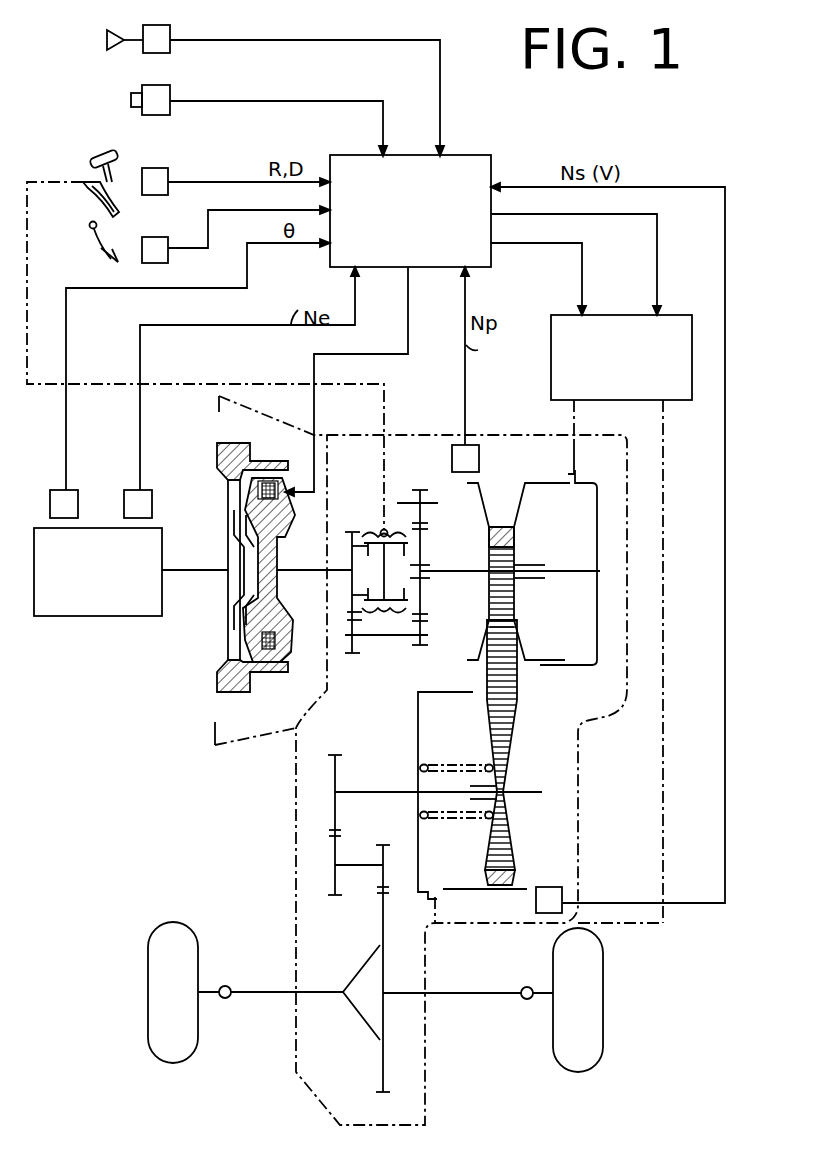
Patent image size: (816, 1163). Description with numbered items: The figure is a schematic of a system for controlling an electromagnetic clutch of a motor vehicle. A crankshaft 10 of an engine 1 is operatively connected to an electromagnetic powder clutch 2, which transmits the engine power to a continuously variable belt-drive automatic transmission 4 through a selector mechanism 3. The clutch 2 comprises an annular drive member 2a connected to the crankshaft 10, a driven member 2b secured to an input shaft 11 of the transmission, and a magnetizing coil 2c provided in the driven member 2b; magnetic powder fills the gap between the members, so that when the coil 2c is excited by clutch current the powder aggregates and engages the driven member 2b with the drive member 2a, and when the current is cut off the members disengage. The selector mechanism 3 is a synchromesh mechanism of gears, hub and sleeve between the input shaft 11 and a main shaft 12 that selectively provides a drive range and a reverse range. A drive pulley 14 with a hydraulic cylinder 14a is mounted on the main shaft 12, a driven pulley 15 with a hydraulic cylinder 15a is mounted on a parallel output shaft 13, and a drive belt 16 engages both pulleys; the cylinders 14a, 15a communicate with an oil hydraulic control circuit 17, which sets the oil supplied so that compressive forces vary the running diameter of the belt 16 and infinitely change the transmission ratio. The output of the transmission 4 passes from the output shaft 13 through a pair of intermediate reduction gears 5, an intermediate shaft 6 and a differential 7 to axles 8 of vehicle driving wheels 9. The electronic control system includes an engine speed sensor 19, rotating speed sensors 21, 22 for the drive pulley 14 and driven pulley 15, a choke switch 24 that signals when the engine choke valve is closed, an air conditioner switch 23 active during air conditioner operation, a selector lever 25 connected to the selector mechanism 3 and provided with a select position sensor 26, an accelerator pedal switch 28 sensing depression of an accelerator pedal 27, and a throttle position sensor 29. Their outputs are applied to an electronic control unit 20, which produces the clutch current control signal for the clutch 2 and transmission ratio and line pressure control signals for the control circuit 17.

The engine 1 is at (62, 616).
The electromagnetic powder clutch 2 is at (247, 563).
The annular drive member 2a is at (217, 466).
The driven member 2b is at (286, 528).
The magnetizing coil 2c is at (276, 486).
The selector mechanism 3 is at (367, 530).
The continuously variable belt-drive automatic transmission 4 is at (505, 675).
The intermediate reduction gears 5 is at (339, 754).
The intermediate shaft 6 is at (356, 866).
The differential 7 is at (364, 974).
The axles 8 is at (270, 992).
The vehicle driving wheels 9 is at (198, 1032).
The crankshaft 10 is at (206, 573).
The input shaft 11 is at (300, 573).
The main shaft 12 is at (466, 575).
The output shaft 13 is at (378, 790).
The drive pulley 14 is at (479, 516).
The hydraulic cylinder 14a is at (578, 538).
The driven pulley 15 is at (516, 700).
The hydraulic cylinder 15a is at (437, 713).
The drive belt 16 is at (487, 673).
The oil hydraulic control circuit 17 is at (551, 365).
The engine speed sensor 19 is at (124, 491).
The electronic control unit 20 is at (488, 150).
The rotating speed sensor 21 is at (479, 462).
The rotating speed sensor 22 is at (556, 886).
The air conditioner switch 23 is at (170, 100).
The choke switch 24 is at (170, 36).
The selector lever 25 is at (94, 160).
The select position sensor 26 is at (168, 174).
The accelerator pedal 27 is at (97, 247).
The accelerator pedal switch 28 is at (168, 246).
The throttle position sensor 29 is at (56, 491).